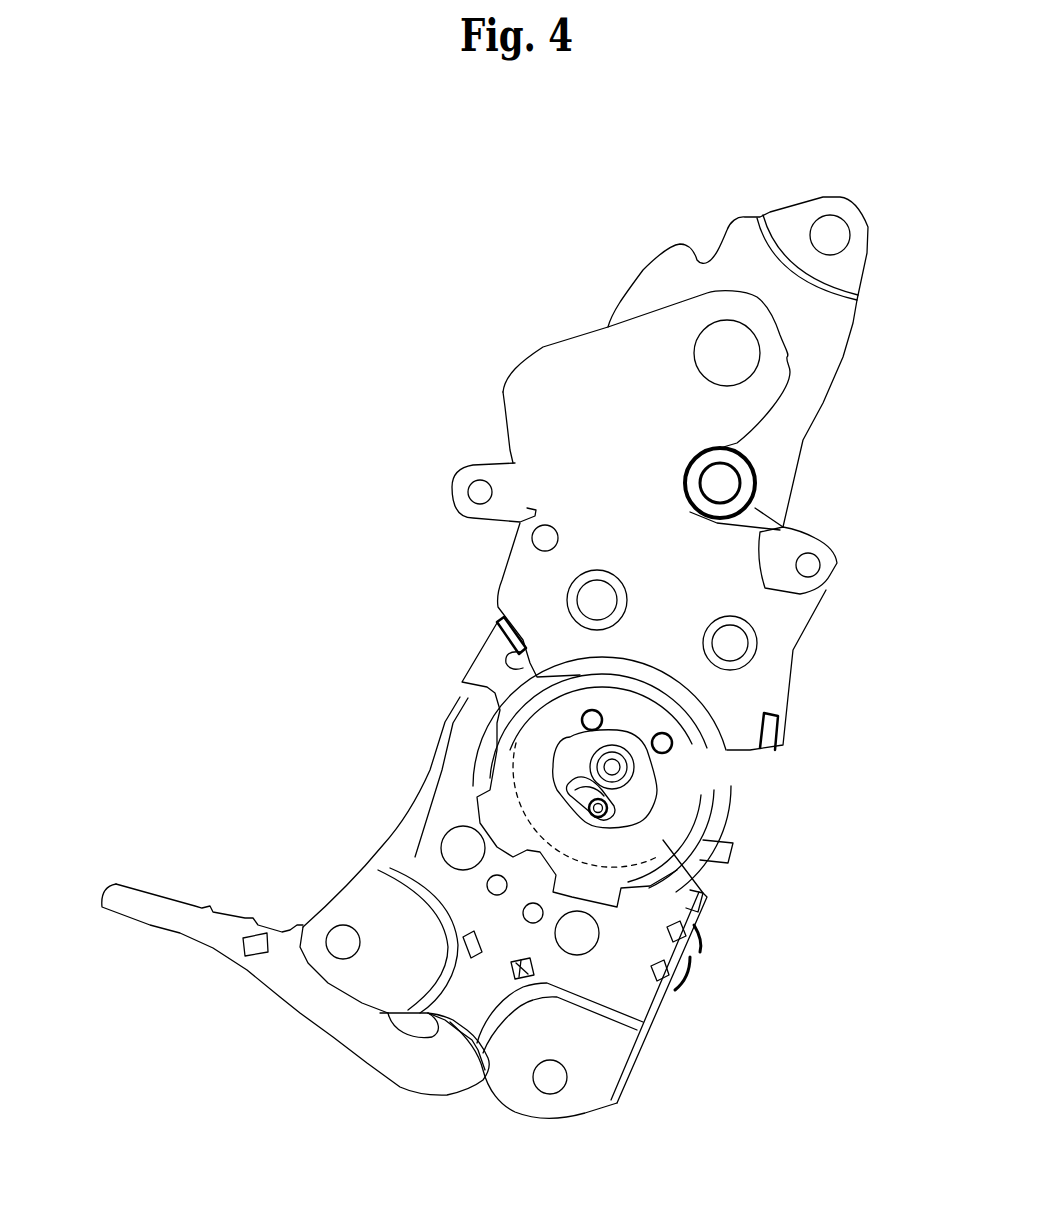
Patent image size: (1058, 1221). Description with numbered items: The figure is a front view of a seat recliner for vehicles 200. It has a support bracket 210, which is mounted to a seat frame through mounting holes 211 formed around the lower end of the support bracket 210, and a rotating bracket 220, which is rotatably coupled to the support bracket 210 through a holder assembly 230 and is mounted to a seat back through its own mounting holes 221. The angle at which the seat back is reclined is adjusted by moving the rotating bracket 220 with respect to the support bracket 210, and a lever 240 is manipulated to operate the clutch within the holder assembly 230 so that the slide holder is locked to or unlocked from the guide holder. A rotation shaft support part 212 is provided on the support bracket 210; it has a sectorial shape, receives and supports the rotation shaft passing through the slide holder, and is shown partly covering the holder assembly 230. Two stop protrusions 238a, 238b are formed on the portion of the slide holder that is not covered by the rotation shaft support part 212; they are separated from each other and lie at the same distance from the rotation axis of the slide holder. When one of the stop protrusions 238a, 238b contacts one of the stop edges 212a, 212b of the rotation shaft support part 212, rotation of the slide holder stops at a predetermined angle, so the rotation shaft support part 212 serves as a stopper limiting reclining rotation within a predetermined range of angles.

The seat recliner for vehicles 200 is at (253, 572).
The support bracket 210 is at (413, 857).
The mounting holes 211 is at (340, 940).
The rotation shaft support part 212 is at (587, 747).
The stop edge 212a is at (587, 747).
The stop edge 212b is at (652, 776).
The rotating bracket 220 is at (520, 580).
The mounting holes 221 is at (478, 493).
The holder assembly 230 is at (730, 778).
The stop protrusion 238a is at (594, 714).
The stop protrusion 238b is at (667, 740).
The lever 240 is at (152, 917).